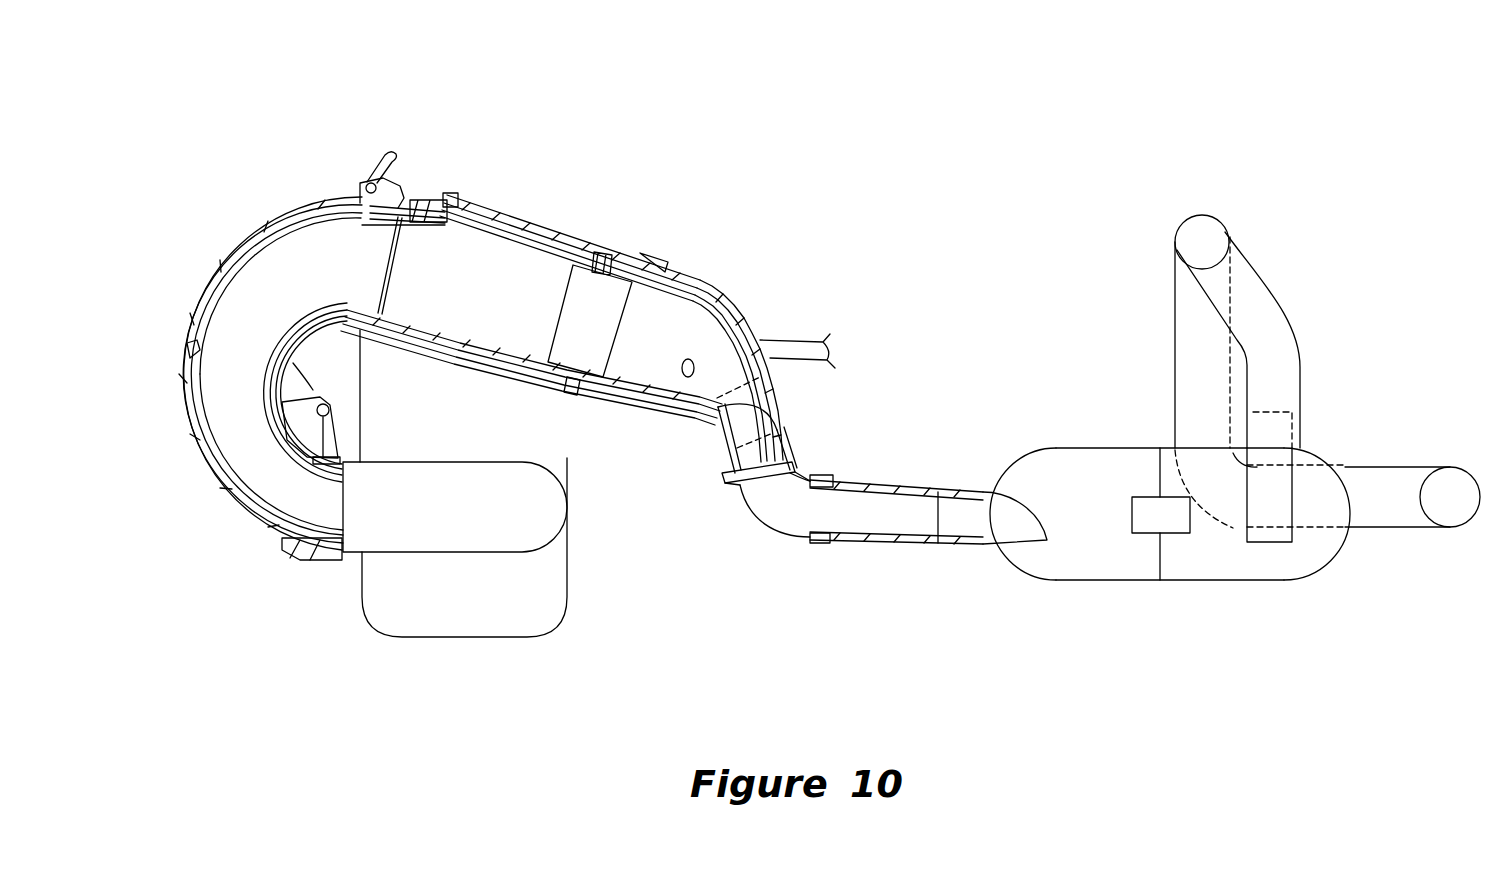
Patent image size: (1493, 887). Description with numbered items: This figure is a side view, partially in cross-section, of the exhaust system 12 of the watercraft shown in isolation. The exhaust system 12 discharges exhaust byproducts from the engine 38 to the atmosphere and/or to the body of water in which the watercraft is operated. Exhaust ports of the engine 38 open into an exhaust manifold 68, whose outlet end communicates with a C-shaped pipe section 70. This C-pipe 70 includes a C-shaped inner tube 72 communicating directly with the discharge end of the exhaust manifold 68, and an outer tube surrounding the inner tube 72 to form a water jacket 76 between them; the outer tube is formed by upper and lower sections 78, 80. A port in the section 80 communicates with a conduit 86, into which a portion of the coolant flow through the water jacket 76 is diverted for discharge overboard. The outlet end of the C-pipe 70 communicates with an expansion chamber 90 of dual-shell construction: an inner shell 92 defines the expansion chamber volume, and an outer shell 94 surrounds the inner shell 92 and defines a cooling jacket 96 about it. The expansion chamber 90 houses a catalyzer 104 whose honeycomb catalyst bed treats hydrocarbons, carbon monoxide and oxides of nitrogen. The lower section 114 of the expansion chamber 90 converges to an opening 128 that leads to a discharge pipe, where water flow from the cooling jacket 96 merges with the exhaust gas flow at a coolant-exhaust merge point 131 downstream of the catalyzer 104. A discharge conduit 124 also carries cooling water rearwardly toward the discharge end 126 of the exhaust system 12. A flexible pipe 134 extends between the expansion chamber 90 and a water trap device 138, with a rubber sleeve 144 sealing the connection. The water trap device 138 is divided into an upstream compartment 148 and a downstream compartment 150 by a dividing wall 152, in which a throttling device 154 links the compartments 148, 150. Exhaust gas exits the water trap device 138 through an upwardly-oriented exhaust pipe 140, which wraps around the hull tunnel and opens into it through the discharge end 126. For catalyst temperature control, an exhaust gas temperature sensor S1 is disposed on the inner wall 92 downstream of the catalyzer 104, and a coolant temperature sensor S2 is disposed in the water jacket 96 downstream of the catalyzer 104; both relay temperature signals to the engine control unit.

The exhaust system 12 is at (617, 99).
The engine 38 is at (472, 648).
The exhaust manifold 68 is at (390, 537).
The C-shaped pipe section 70 is at (237, 523).
The C-shaped inner tube 72 is at (207, 427).
The water jacket 76 is at (217, 265).
The upper section 78 is at (200, 437).
The lower section 80 is at (252, 230).
The conduit 86 is at (375, 156).
The expansion chamber 90 is at (524, 201).
The inner shell 92 is at (590, 252).
The outer shell 94 is at (550, 227).
The cooling jacket 96 is at (463, 196).
The catalyzer 104 is at (572, 313).
The lower section 114 is at (718, 290).
The discharge conduit 124 is at (818, 338).
The discharge end 126 is at (1448, 510).
The opening 128 is at (790, 407).
The coolant-exhaust merge point 131 is at (755, 480).
The flexible pipe 134 is at (788, 513).
The water trap device 138 is at (1058, 447).
The exhaust pipe 140 is at (1187, 317).
The rubber sleeve 144 is at (868, 478).
The upstream compartment 148 is at (1075, 567).
The downstream compartment 150 is at (1227, 563).
The dividing wall 152 is at (1160, 557).
The throttling device 154 is at (1143, 500).
The exhaust gas temperature sensor S1 is at (686, 377).
The coolant temperature sensor S2 is at (747, 323).